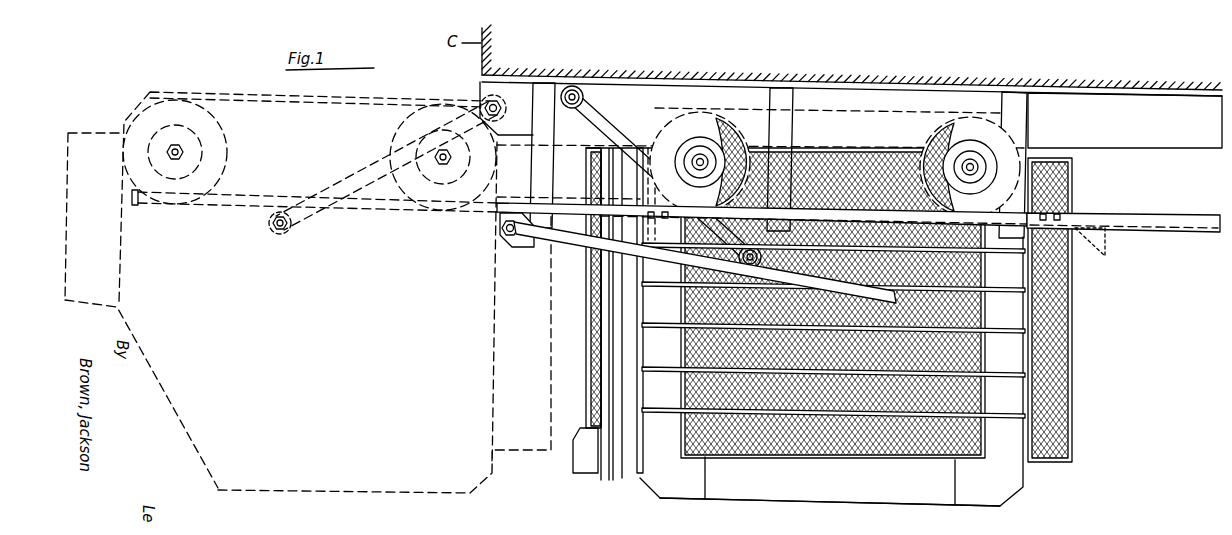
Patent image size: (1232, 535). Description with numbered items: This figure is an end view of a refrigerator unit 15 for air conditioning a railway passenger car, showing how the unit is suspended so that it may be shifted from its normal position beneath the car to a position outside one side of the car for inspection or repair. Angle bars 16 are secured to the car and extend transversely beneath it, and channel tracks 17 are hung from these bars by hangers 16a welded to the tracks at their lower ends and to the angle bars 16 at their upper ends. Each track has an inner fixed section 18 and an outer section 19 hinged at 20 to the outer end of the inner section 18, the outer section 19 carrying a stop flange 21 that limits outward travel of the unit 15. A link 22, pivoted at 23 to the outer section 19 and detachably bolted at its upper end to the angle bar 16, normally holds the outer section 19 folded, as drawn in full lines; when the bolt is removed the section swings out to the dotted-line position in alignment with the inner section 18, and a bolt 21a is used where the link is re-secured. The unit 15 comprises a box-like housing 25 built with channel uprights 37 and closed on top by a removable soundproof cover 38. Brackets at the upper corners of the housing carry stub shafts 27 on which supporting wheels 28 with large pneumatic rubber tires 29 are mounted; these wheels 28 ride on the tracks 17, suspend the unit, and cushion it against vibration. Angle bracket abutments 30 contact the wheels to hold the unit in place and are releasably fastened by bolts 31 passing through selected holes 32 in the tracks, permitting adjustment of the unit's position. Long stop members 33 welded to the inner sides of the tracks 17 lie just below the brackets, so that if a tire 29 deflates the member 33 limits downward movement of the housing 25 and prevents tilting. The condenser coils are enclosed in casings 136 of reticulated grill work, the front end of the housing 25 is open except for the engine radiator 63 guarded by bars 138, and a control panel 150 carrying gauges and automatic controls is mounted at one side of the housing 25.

The refrigerator unit 15 is at (484, 485).
The angle bars 16 is at (1150, 150).
The hangers 16a is at (1047, 128).
The channel tracks 17 is at (1186, 212).
The inner fixed section 18 is at (1158, 230).
The outer section 19 is at (243, 203).
The hinge 20 is at (500, 233).
The stop flange 21 is at (898, 297).
The pivot bolt 21a is at (482, 100).
The link 22 is at (350, 178).
The pivot 23 is at (277, 236).
The housing 25 is at (1015, 488).
The stub shaft 27 is at (835, 164).
The supporting wheel 28 is at (716, 148).
The pneumatic rubber tire 29 is at (220, 141).
The angle bracket abutment 30 is at (650, 201).
The bolts 31 is at (594, 193).
The holes 32 is at (881, 248).
The stop member 33 is at (970, 138).
The channel uprights 37 is at (580, 531).
The cover 38 is at (854, 76).
The engine radiator 63 is at (878, 460).
The casing 136 is at (119, 288).
The bars 138 is at (673, 372).
The control panel 150 is at (618, 432).